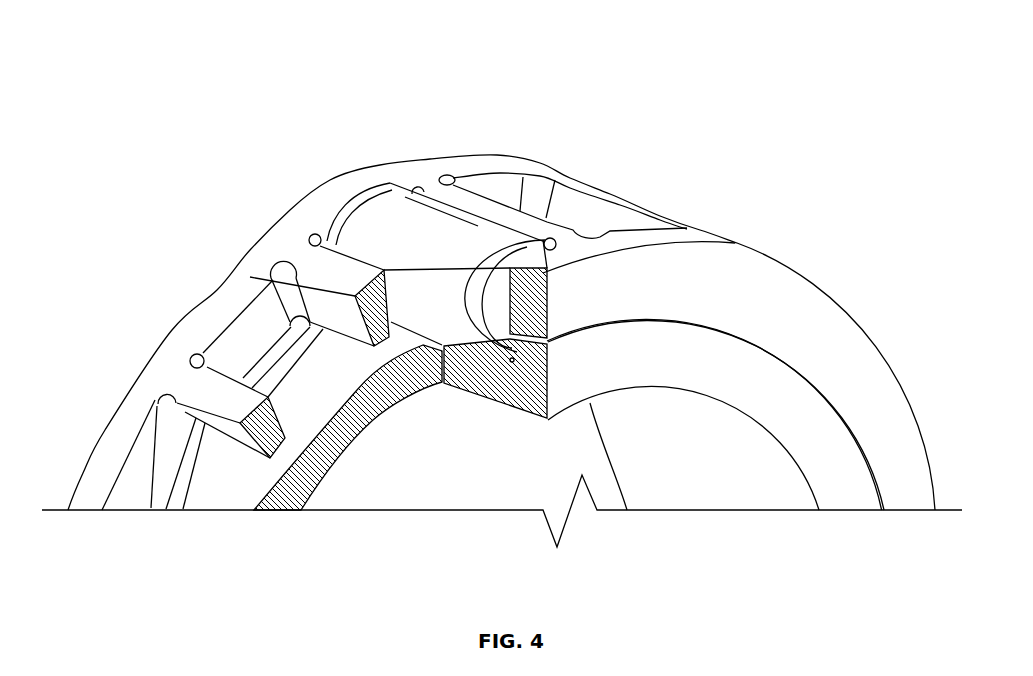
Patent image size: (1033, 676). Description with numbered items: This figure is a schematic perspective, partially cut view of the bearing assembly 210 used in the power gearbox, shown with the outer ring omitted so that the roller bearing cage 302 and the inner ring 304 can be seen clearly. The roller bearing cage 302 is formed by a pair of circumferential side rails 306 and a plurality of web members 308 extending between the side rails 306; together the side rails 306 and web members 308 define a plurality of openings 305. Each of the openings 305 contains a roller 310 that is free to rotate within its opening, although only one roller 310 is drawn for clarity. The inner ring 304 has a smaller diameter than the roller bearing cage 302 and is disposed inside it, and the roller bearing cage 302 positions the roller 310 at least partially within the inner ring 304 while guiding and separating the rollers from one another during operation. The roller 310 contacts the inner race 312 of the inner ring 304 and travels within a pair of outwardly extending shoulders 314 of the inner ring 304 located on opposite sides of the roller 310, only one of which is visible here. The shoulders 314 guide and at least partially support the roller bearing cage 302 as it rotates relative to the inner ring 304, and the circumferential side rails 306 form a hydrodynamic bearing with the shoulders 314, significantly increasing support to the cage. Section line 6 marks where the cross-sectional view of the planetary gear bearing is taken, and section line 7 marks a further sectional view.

The bearing assembly 210 is at (290, 114).
The roller bearing cage 302 is at (438, 170).
The inner ring 304 is at (738, 485).
The openings 305 is at (580, 208).
The circumferential side rails 306 is at (694, 260).
The web members 308 is at (491, 208).
The roller 310 is at (447, 322).
The inner race 312 is at (322, 403).
The outwardly extending shoulders 314 is at (483, 330).
The line 6- 6 is at (278, 142).
The line 7- 7 is at (353, 270).